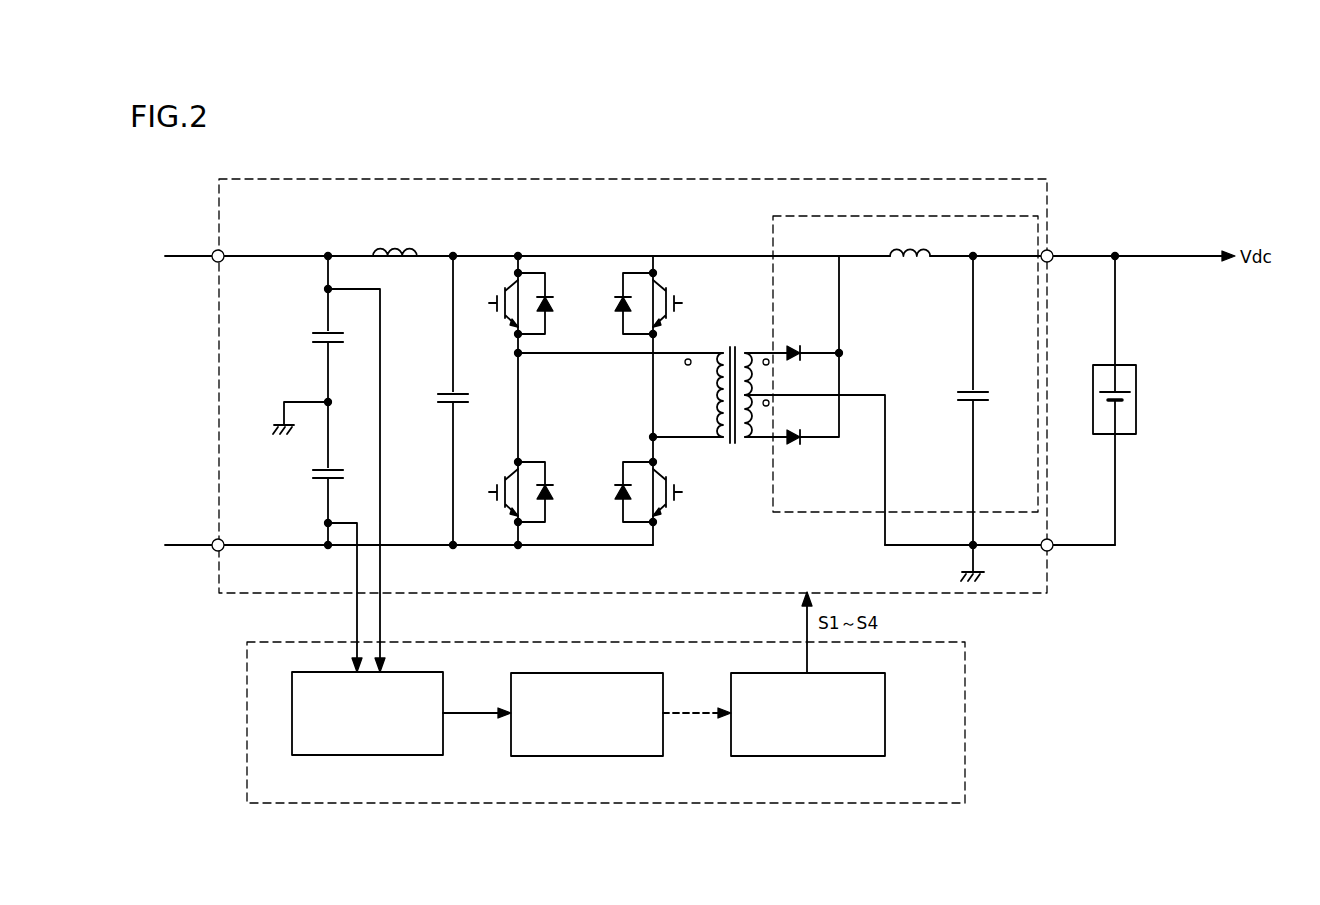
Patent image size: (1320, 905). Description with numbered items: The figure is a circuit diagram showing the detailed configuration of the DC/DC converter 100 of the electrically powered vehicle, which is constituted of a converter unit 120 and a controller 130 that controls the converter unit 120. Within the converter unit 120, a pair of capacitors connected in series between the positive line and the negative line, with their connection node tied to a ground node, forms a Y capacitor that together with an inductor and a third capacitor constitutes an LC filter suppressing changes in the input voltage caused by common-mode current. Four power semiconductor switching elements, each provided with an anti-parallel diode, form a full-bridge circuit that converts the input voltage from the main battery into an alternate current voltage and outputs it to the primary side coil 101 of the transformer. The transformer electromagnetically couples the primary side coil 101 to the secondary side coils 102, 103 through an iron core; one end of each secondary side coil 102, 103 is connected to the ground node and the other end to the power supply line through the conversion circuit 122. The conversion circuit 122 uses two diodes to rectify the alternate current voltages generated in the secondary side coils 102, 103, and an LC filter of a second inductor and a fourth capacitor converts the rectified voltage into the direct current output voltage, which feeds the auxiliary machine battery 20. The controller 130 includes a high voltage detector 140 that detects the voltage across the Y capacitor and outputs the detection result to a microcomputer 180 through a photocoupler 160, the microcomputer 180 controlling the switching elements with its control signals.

The DC/DC converter 100 is at (866, 139).
The converter unit 120 is at (1000, 178).
The conversion circuit 122 is at (965, 216).
The controller 130 is at (893, 803).
The high voltage detector 140 is at (385, 755).
The photocoupler 160 is at (603, 756).
The microcomputer 180 is at (823, 756).
The primary side coil 101 is at (718, 448).
The secondary side coil 102 is at (760, 372).
The secondary side coil 103 is at (760, 410).
The auxiliary machine battery 20 is at (1128, 435).